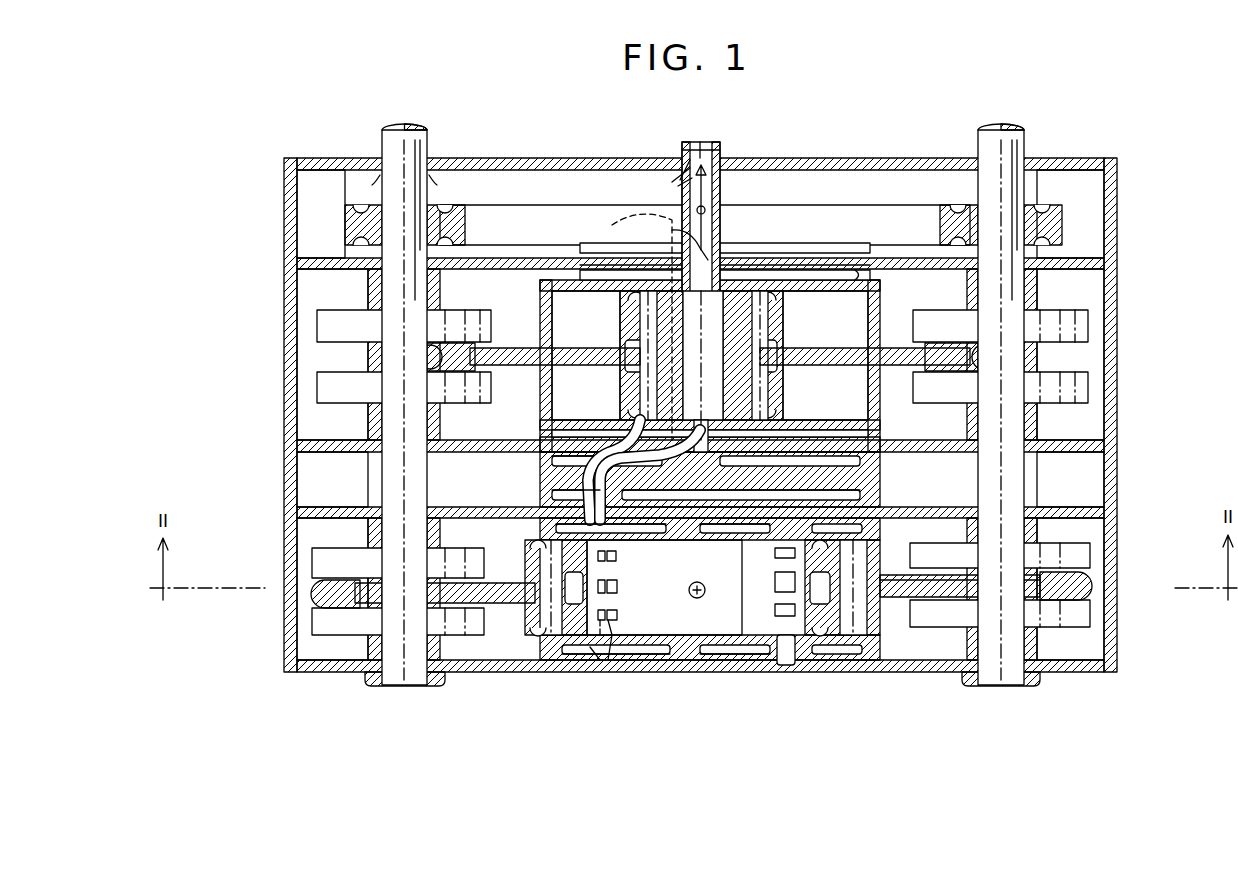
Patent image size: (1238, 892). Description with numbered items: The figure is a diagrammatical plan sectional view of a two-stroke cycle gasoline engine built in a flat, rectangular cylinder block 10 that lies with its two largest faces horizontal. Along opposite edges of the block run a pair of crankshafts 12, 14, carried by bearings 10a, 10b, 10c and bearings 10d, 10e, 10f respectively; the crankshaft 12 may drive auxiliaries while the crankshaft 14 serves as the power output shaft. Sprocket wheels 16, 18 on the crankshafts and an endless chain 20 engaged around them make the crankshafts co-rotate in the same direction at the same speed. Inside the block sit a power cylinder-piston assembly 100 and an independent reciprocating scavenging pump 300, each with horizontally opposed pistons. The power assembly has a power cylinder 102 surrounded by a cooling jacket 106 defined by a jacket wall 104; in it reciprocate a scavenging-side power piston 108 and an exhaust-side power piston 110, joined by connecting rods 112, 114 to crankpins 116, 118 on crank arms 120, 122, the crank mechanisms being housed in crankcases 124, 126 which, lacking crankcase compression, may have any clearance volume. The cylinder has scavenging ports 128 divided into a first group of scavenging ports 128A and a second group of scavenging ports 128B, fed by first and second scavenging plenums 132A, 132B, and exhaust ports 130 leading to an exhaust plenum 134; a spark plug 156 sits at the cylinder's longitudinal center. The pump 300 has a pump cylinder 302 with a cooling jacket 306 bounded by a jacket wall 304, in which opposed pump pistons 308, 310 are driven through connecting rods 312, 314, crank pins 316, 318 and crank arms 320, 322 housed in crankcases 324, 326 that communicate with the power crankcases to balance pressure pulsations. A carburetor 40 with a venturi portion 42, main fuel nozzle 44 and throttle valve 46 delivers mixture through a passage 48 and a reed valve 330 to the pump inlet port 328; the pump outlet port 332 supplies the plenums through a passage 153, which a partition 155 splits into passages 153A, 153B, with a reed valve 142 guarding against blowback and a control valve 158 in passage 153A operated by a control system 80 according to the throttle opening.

The cylinder block 10 is at (300, 158).
The bearing 10a is at (368, 538).
The bearing 10b is at (368, 292).
The bearing 10c is at (368, 188).
The bearing 10d is at (1037, 533).
The bearing 10e is at (1037, 288).
The bearing 10f is at (1032, 186).
The crankshaft 12 is at (400, 128).
The crankshaft 14 is at (994, 128).
The sprocket wheel 16 is at (458, 205).
The sprocket wheel 18 is at (952, 205).
The endless chain 20 is at (528, 208).
The carburetor 40 is at (722, 152).
The venturi portion 42 is at (702, 142).
The main fuel nozzle 44 is at (680, 186).
The throttle valve 46 is at (706, 200).
The passage 48 is at (672, 240).
The control system 80 is at (631, 327).
The power cylinder-piston assembly 100 is at (735, 652).
The power cylinder 102 is at (755, 518).
The jacket wall 104 is at (675, 660).
The cooling jacket 106 is at (625, 660).
The power piston 108 is at (618, 615).
The power piston 110 is at (775, 608).
The connecting rod 112 is at (410, 583).
The connecting rod 114 is at (972, 575).
The crankpin 116 is at (330, 594).
The crankpin 118 is at (1060, 586).
The crank arm 120 is at (318, 563).
The crank arm 122 is at (1090, 556).
The crankcase 124 is at (470, 672).
The crankcase 126 is at (928, 672).
The scavenging ports 128 is at (618, 587).
The first group of scavenging ports 128A is at (610, 660).
The second group of scavenging ports 128B is at (592, 660).
The exhaust ports 130 is at (775, 582).
The first scavenging plenum 132A is at (616, 556).
The second scavenging plenum 132B is at (552, 528).
The exhaust plenum 134 is at (788, 665).
The reed valve 142 is at (552, 461).
The passage 153 is at (700, 466).
The passage 153A is at (727, 545).
The passage 153B is at (552, 495).
The partition 155 is at (580, 470).
The spark plug 156 is at (697, 598).
The control valve 158 is at (770, 490).
The scavenging pump 300 is at (810, 270).
The pump cylinder 302 is at (800, 291).
The jacket wall 304 is at (838, 270).
The cooling jacket 306 is at (770, 270).
The pump piston 308 is at (628, 308).
The pump piston 310 is at (780, 398).
The connecting rod 312 is at (520, 348).
The connecting rod 314 is at (830, 348).
The crank pin 316 is at (418, 357).
The crank pin 318 is at (998, 357).
The crank arm 320 is at (320, 388).
The crank arm 322 is at (1090, 386).
The crankcase 324 is at (297, 437).
The crankcase 326 is at (1104, 412).
The inlet port 328 is at (703, 291).
The reed valve 330 is at (716, 243).
The outlet port 332 is at (701, 420).